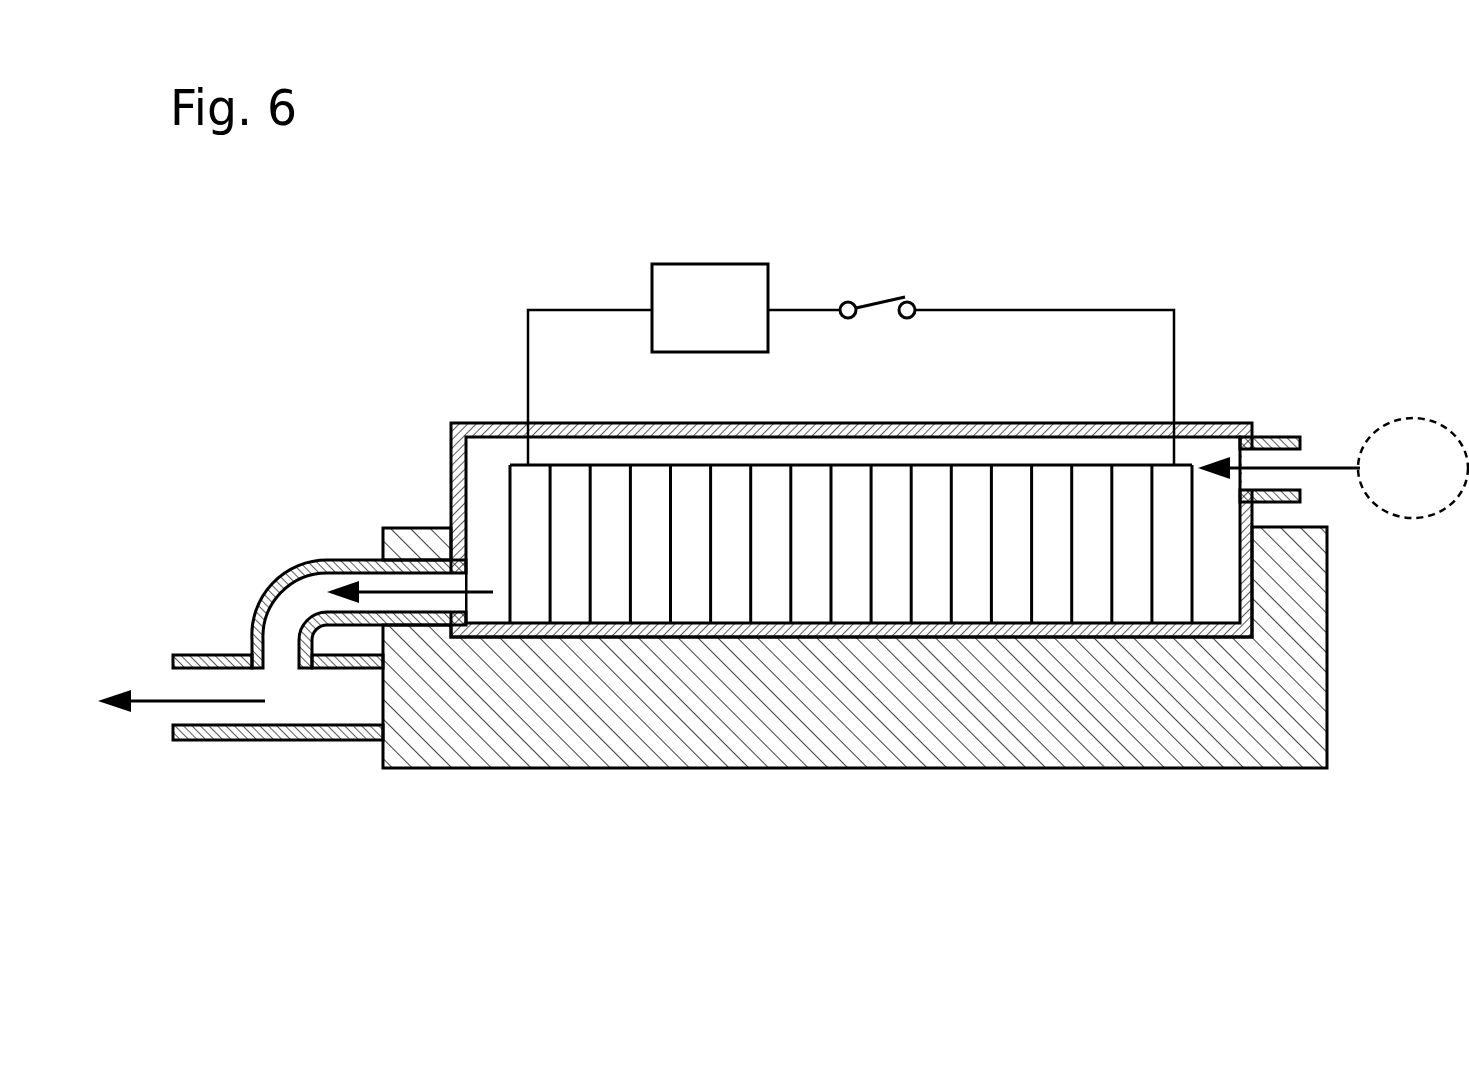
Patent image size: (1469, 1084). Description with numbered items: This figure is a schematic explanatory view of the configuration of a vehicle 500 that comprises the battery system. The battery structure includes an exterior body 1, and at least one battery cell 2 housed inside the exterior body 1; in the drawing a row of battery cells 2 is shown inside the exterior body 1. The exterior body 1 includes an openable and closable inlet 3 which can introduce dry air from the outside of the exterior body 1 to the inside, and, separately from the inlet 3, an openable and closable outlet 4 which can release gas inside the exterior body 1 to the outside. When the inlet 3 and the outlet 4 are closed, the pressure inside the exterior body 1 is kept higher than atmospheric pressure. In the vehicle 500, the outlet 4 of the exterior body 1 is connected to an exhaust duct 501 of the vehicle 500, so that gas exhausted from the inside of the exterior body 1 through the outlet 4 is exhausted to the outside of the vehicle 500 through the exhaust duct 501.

The vehicle 500 is at (778, 192).
The exterior body 1 is at (1131, 423).
The battery cell 2 is at (1130, 608).
The inlet 3 is at (1265, 437).
The outlet 4 is at (427, 626).
The exhaust duct 501 is at (285, 742).